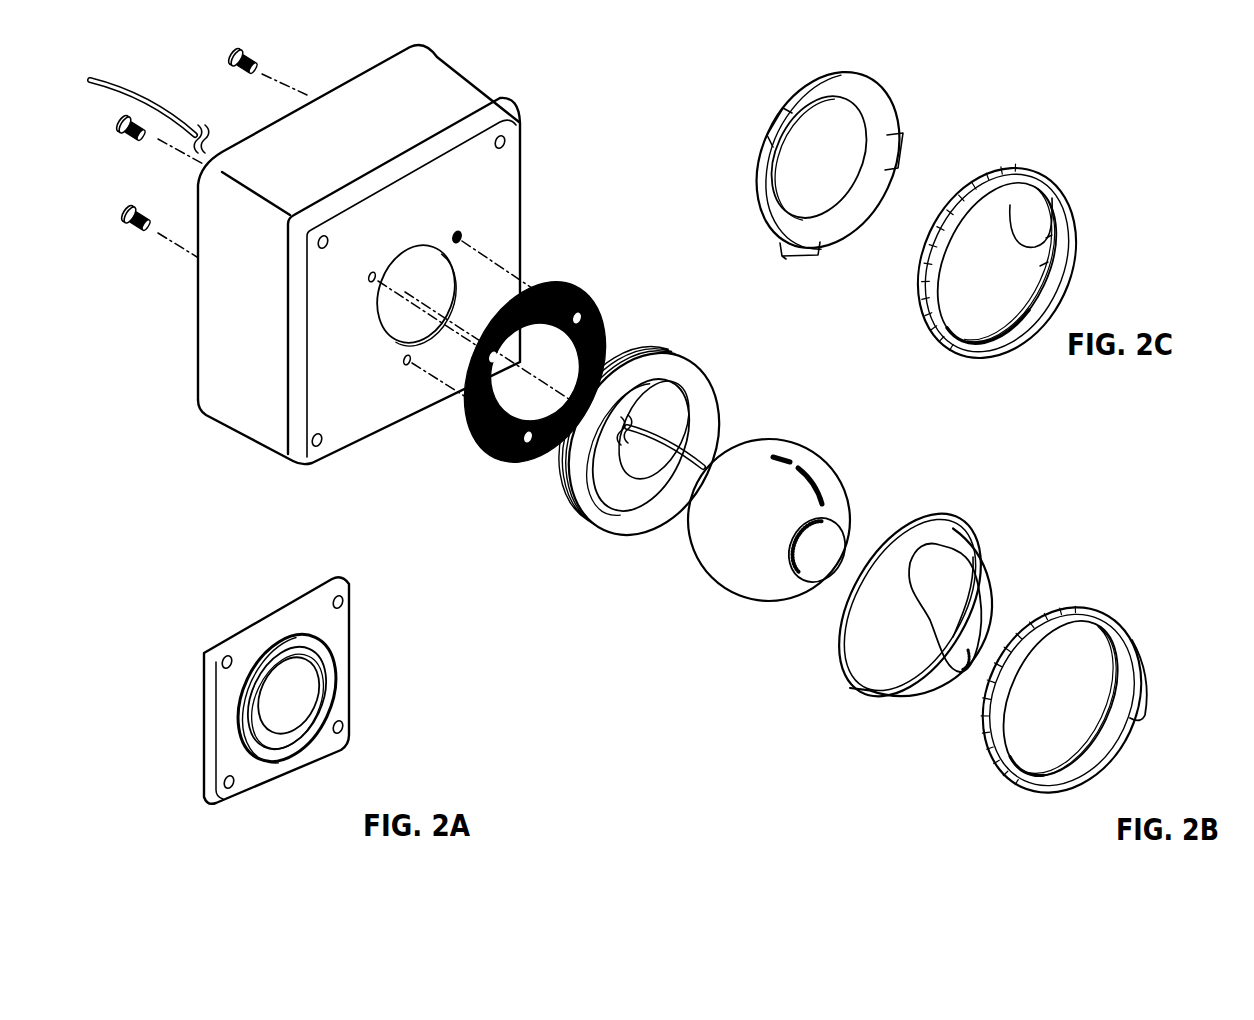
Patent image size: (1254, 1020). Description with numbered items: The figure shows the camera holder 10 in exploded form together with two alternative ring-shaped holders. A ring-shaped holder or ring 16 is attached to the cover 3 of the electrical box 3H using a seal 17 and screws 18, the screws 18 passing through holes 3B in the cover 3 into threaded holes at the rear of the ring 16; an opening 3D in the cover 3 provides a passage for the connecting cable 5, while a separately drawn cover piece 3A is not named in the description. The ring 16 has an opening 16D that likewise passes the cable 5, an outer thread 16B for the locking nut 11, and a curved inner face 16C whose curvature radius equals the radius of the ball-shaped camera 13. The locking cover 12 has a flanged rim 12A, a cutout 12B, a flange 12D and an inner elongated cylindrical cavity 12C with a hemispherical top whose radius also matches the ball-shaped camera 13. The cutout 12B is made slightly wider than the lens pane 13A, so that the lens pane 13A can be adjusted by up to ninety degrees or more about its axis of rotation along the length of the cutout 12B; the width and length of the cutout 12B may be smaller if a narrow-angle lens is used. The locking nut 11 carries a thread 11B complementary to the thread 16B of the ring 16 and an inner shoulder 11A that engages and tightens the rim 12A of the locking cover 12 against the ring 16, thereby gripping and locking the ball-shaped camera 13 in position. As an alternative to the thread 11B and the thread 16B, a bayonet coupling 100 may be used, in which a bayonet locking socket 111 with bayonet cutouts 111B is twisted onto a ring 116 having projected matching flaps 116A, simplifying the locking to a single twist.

In FIG. 2B, the cover 3 is at (484, 116).
In FIG. 2B, the electrical box 3H is at (434, 84).
In FIG. 2A, the housing plate 3A is at (308, 593).
In FIG. 2B, the holes 3B is at (460, 235).
In FIG. 2B, the opening 3D is at (438, 278).
In FIG. 2B, the connecting cable 5 is at (718, 440).
In FIG. 2B, the camera holder 10 is at (617, 215).
In FIG. 2B, the locking nut 11 is at (1094, 605).
In FIG. 2B, the inner shoulder 11A is at (1126, 713).
In FIG. 2B, the thread 11B is at (1059, 773).
In FIG. 2B, the locking cover 12 is at (863, 660).
In FIG. 2B, the flanged rim 12A is at (934, 524).
In FIG. 2B, the cutout 12B is at (988, 560).
In FIG. 2B, the inner elongated cylindrical cavity 12C is at (989, 603).
In FIG. 2B, the flange 12D is at (837, 637).
In FIG. 2B, the ball-shaped camera 13 is at (722, 548).
In FIG. 2B, the lens pane 13A is at (832, 538).
In FIG. 2B, the ring-shaped holder 16 is at (672, 357).
In FIG. 2B, the outer thread 16B is at (584, 528).
In FIG. 2A, the outer thread 16B is at (313, 637).
In FIG. 2B, the curved inner face 16C is at (698, 390).
In FIG. 2A, the curved inner face 16C is at (326, 685).
In FIG. 2B, the opening 16D is at (676, 420).
In FIG. 2A, the opening 16D is at (303, 690).
In FIG. 2B, the seal 17 is at (588, 291).
In FIG. 2B, the screws 18 is at (228, 55).
In FIG. 2C, the bayonet coupling 100 is at (983, 117).
In FIG. 2C, the bayonet locking socket 111 is at (1060, 295).
In FIG. 2C, the bayonet cutouts 111B is at (1010, 205).
In FIG. 2C, the ring 116 is at (893, 88).
In FIG. 2C, the projected matching flaps 116A is at (770, 127).